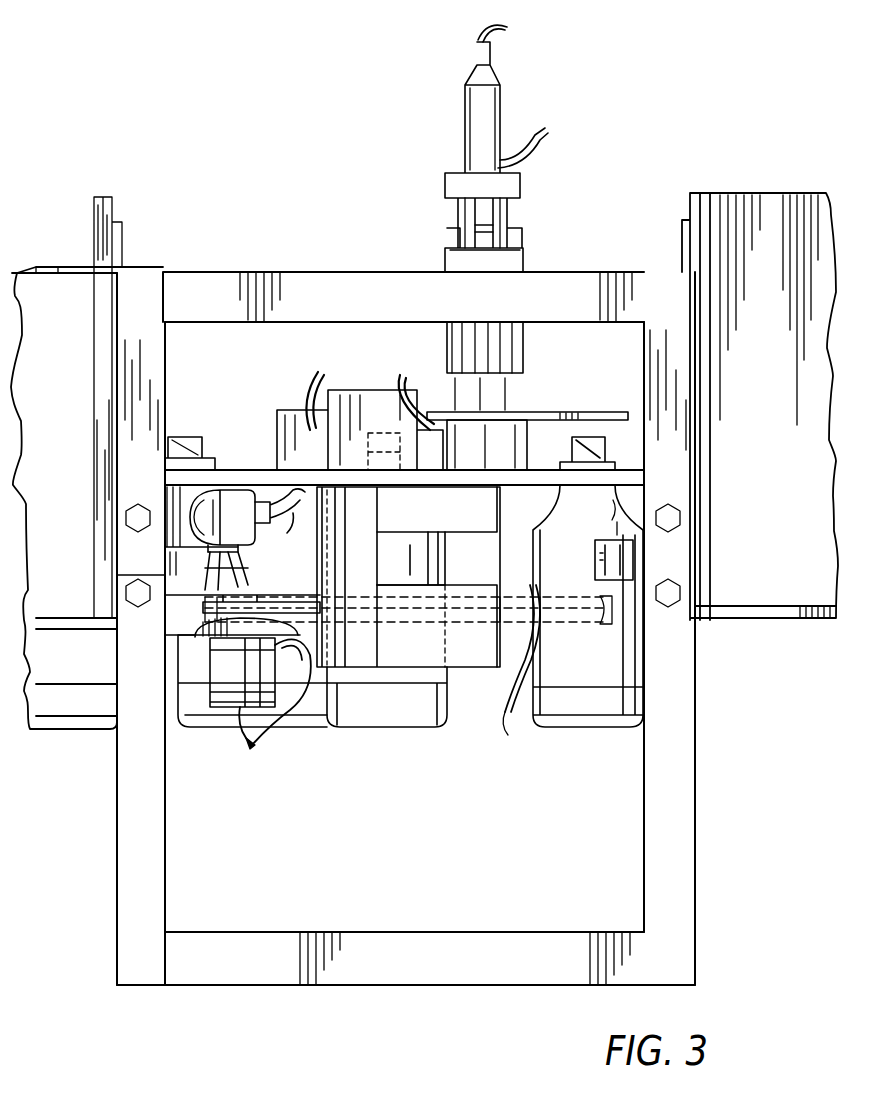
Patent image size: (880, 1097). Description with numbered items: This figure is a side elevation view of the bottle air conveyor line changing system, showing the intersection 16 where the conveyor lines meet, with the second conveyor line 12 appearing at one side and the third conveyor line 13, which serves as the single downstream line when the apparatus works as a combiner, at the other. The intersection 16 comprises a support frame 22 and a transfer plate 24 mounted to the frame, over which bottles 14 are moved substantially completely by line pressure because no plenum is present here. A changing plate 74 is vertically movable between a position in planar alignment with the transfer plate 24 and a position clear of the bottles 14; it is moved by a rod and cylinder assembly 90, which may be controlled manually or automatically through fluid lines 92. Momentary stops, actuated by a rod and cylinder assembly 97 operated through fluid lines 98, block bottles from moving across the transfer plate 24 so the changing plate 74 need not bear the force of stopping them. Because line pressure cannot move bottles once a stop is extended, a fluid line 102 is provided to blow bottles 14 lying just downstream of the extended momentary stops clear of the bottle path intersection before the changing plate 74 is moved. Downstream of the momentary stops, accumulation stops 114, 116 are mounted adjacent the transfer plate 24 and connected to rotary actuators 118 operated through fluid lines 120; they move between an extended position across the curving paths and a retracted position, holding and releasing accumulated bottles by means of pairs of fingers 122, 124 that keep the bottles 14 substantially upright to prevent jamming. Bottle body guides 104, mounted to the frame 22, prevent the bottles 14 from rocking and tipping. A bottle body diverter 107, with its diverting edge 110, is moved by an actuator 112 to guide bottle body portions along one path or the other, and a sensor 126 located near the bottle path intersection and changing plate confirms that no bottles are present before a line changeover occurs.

The second conveyor line 12 is at (64, 597).
The third conveyor line 13 is at (758, 450).
The bottles 14 is at (580, 544).
The intersection 16 is at (301, 258).
The support frame 22 is at (203, 283).
The transfer plate 24 is at (520, 476).
The changing plate 74 is at (582, 412).
The rod and cylinder assembly 90 is at (452, 172).
The fluid lines 92 is at (480, 45).
The rod and cylinder assembly 97 is at (233, 500).
The fluid lines 98 is at (215, 572).
The fluid line 102 is at (278, 528).
The bottle body guides 104 is at (520, 640).
The bottle body diverter 107 is at (562, 598).
The diverting edge 110 is at (528, 665).
The actuator 112 is at (236, 656).
The accumulation stop 114 is at (296, 665).
The accumulation stop 116 is at (408, 577).
The rotary actuators 118 is at (368, 388).
The fluid lines 120 is at (320, 365).
The finger 122 is at (485, 518).
The finger 124 is at (485, 658).
The sensor 126 is at (620, 560).